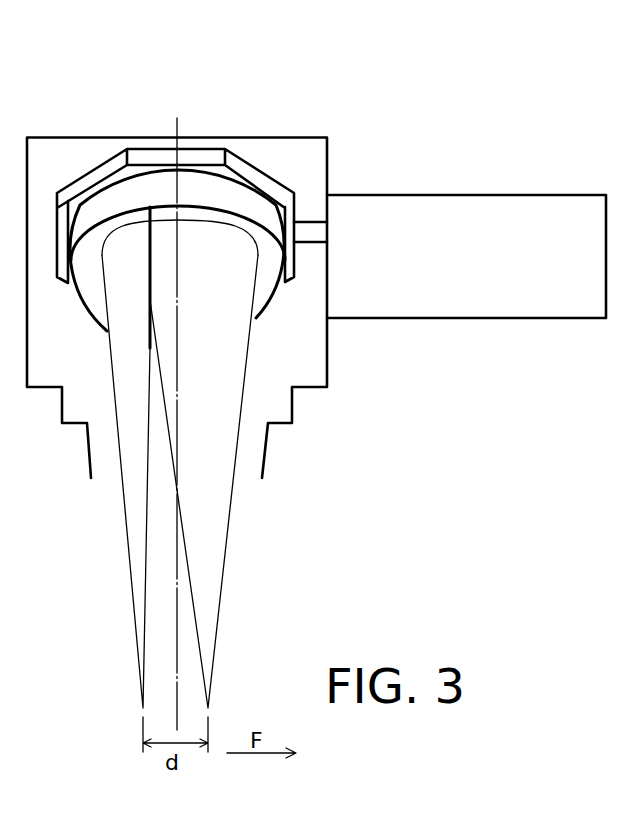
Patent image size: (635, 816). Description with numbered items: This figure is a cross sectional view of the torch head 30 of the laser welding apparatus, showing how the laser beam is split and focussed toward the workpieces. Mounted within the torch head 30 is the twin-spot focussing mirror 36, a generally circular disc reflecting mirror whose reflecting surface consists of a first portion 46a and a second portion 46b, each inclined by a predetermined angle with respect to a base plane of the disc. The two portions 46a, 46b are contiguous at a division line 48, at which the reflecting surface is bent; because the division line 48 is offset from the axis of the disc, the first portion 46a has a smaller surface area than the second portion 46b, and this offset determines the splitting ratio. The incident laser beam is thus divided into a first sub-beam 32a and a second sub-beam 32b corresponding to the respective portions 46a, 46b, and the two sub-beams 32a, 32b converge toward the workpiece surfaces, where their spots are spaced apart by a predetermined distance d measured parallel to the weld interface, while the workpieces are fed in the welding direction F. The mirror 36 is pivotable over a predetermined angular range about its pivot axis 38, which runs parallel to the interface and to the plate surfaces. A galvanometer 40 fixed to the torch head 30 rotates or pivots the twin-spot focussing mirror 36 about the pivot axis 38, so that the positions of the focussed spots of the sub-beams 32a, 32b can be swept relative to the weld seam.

The torch head 30 is at (340, 74).
The first sub-beam 32a is at (130, 578).
The second sub-beam 32b is at (225, 571).
The twin-spot focussing mirror 36 is at (198, 183).
The pivot axis 38 is at (312, 230).
The galvanometer 40 is at (453, 210).
The first portion of reflecting surface 46a is at (92, 247).
The second portion of reflecting surface 46b is at (248, 228).
The division line 48 is at (150, 259).